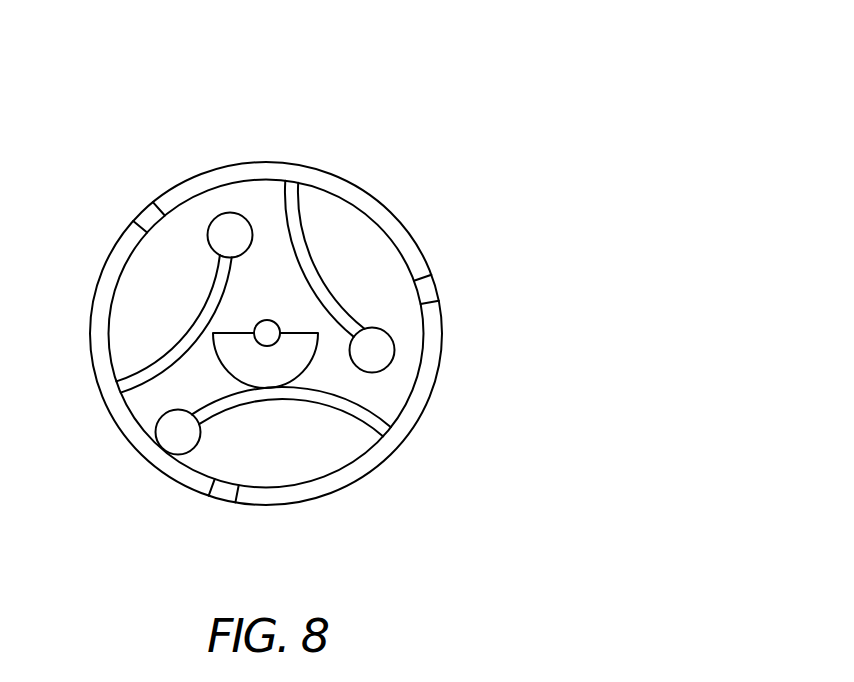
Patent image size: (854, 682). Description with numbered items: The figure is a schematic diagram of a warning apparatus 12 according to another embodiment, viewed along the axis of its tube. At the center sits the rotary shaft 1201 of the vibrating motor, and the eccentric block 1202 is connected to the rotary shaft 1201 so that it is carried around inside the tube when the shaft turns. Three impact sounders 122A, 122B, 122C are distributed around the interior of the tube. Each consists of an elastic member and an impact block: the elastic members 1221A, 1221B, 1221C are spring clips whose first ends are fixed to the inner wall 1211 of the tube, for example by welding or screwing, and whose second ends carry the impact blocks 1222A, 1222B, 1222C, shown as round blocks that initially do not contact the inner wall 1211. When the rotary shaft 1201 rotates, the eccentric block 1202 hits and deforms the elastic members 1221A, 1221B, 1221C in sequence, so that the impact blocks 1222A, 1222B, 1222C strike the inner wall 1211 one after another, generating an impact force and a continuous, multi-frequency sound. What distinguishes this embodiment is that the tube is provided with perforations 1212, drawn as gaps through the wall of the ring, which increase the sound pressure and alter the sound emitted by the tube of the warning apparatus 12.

The warning apparatus 12 is at (458, 124).
The inner wall 1211 is at (357, 215).
The perforations 1212 is at (149, 212).
The rotary shaft 1201 is at (265, 320).
The eccentric block 1202 is at (242, 360).
The impact sounder 122A is at (240, 476).
The impact sounder 122B is at (128, 258).
The impact sounder 122C is at (418, 277).
The elastic member 1221A is at (272, 398).
The elastic member 1221B is at (212, 300).
The elastic member 1221C is at (312, 273).
The impact block 1222A is at (173, 438).
The impact block 1222B is at (225, 230).
The impact block 1222C is at (378, 352).